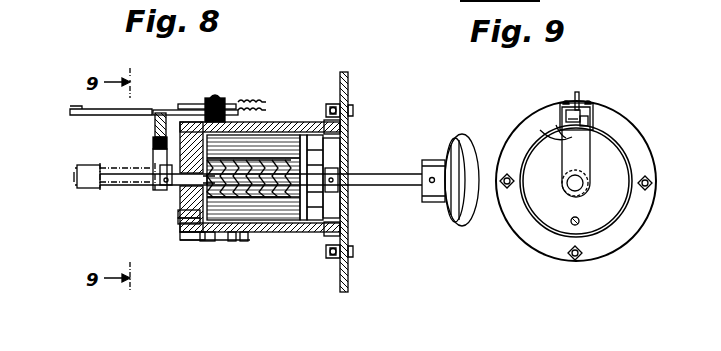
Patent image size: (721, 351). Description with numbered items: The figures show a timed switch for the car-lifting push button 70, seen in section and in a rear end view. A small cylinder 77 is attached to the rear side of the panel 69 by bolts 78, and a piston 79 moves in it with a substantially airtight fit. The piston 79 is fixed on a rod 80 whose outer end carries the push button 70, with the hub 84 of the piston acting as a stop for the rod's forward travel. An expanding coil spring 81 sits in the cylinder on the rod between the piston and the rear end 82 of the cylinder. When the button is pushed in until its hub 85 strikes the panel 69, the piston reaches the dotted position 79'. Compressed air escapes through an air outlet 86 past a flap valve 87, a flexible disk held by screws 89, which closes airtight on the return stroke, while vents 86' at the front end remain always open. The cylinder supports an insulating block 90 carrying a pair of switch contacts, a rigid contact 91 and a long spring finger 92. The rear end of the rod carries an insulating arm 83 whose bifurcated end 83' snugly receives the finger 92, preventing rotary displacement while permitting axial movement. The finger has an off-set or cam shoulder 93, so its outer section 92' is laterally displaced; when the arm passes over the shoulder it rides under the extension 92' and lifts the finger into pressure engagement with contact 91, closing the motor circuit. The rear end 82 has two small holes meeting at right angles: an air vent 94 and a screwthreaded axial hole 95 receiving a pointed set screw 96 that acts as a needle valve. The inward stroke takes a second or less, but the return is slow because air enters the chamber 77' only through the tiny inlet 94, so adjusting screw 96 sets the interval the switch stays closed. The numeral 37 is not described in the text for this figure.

In FIG. 9, the cut-off numeral from adjacent figure 37 is at (580, 0).
In FIG. 8, the panel 69 is at (350, 83).
In FIG. 8, the push button 70 is at (463, 134).
In FIG. 8, the cylinder 77 is at (252, 143).
In FIG. 8, the cylinder chamber 77' is at (262, 73).
In FIG. 8, the bolts 78 is at (354, 110).
In FIG. 9, the bolts 78 is at (649, 190).
In FIG. 8, the piston 79 is at (260, 88).
In FIG. 8, the dotted position of piston 79' is at (260, 256).
In FIG. 8, the rod 80 is at (374, 173).
In FIG. 9, the rod 80 is at (570, 192).
In FIG. 8, the expanding coil spring 81 is at (283, 222).
In FIG. 8, the rear end of the cylinder 82 is at (183, 197).
In FIG. 9, the rear end of the cylinder 82 is at (612, 172).
In FIG. 8, the insulating arm 83 is at (141, 163).
In FIG. 9, the insulating arm 83 is at (626, 152).
In FIG. 8, the recessed or bifurcated end of arm 83' is at (89, 161).
In FIG. 9, the recessed or bifurcated end of arm 83' is at (617, 116).
In FIG. 8, the hub of piston 84 is at (343, 198).
In FIG. 8, the hub of button 85 is at (430, 204).
In FIG. 8, the air outlet 86 is at (216, 267).
In FIG. 8, the vents 86' is at (377, 176).
In FIG. 8, the valve 87 is at (192, 241).
In FIG. 8, the screws 89 is at (244, 242).
In FIG. 8, the insulating block 90 is at (224, 100).
In FIG. 9, the insulating block 90 is at (590, 118).
In FIG. 8, the switch contact 91 is at (196, 103).
In FIG. 9, the switch contact 91 is at (577, 92).
In FIG. 8, the contact finger 92 is at (195, 78).
In FIG. 8, the outer section of contact finger 92' is at (135, 126).
In FIG. 9, the outer section of contact finger 92' is at (534, 116).
In FIG. 8, the cam shoulder 93 is at (150, 112).
In FIG. 9, the cam shoulder 93 is at (565, 130).
In FIG. 8, the air vent 94 is at (190, 238).
In FIG. 8, the axial hole 95 is at (178, 214).
In FIG. 8, the set screw 96 is at (178, 222).